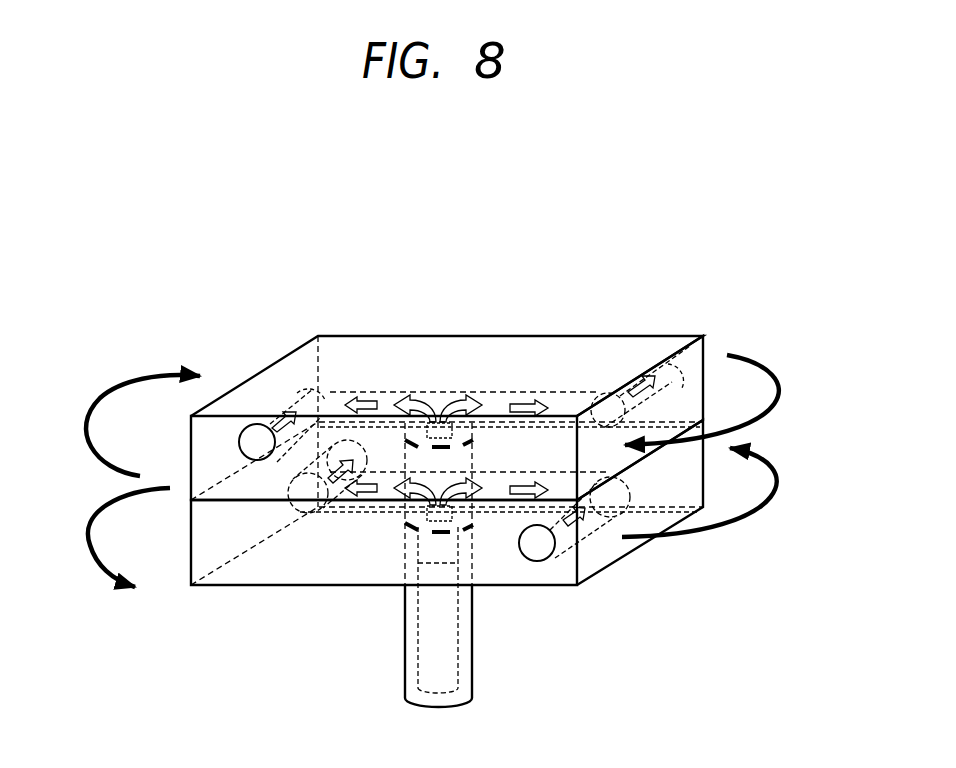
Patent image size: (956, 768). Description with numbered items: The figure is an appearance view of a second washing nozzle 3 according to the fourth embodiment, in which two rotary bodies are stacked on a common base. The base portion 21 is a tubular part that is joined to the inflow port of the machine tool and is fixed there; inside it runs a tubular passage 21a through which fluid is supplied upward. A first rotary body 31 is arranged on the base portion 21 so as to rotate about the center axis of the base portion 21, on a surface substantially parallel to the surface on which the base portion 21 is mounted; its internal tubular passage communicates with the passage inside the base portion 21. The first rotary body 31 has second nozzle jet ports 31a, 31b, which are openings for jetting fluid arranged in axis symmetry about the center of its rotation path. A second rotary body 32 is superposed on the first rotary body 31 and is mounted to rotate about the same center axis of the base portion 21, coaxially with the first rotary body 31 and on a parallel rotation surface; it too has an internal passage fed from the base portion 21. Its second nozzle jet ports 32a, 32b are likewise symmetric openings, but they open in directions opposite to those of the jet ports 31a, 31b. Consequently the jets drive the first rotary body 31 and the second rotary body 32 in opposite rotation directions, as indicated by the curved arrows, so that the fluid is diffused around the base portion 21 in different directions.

The second washing nozzle 3 is at (542, 311).
The second rotary body 32 is at (598, 337).
The second nozzle jet port 32a is at (255, 438).
The second nozzle jet port 32b is at (690, 352).
The first rotary body 31 is at (628, 555).
The second nozzle jet port 31a is at (351, 446).
The second nozzle jet port 31b is at (547, 548).
The base portion 21 is at (405, 653).
The tubular passage 21a is at (450, 647).